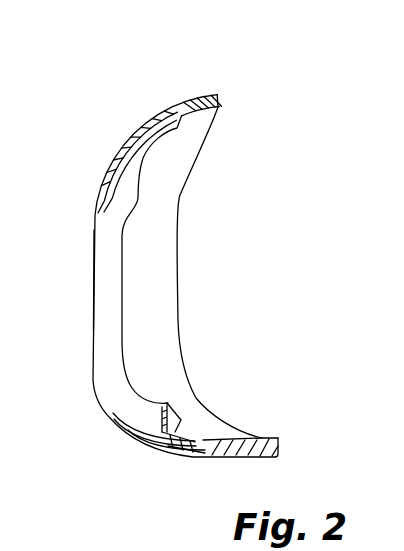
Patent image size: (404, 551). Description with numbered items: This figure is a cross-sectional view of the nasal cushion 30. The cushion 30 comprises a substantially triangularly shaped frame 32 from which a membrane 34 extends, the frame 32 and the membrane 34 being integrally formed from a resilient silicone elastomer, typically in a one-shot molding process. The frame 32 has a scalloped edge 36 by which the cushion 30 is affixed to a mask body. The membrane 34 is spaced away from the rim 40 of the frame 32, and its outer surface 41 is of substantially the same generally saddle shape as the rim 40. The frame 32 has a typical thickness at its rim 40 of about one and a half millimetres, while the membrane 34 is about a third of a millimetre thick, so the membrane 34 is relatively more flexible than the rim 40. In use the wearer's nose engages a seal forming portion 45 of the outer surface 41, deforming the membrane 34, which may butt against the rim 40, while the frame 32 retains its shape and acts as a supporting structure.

The nasal cushion 30 is at (240, 118).
The frame 32 is at (195, 92).
The membrane 34 is at (142, 183).
The scalloped edge 36 is at (278, 440).
The rim 40 is at (160, 120).
The outer surface 41 is at (93, 297).
The seal forming portion 45 is at (123, 192).